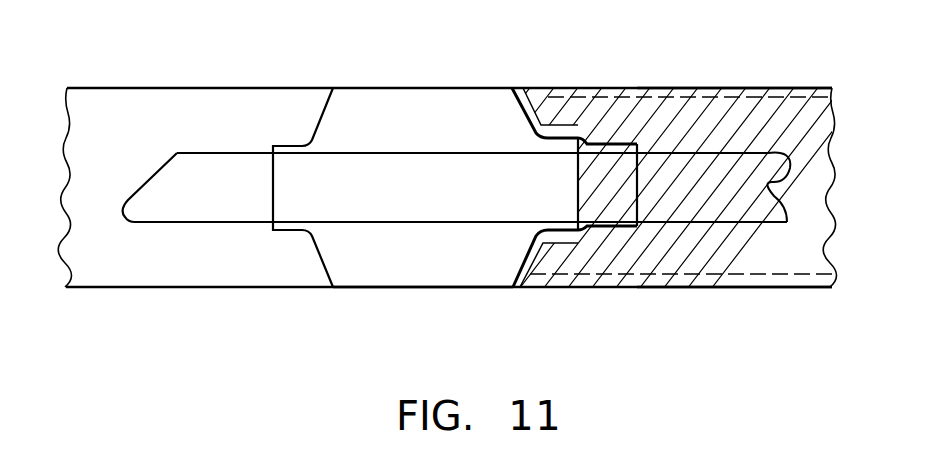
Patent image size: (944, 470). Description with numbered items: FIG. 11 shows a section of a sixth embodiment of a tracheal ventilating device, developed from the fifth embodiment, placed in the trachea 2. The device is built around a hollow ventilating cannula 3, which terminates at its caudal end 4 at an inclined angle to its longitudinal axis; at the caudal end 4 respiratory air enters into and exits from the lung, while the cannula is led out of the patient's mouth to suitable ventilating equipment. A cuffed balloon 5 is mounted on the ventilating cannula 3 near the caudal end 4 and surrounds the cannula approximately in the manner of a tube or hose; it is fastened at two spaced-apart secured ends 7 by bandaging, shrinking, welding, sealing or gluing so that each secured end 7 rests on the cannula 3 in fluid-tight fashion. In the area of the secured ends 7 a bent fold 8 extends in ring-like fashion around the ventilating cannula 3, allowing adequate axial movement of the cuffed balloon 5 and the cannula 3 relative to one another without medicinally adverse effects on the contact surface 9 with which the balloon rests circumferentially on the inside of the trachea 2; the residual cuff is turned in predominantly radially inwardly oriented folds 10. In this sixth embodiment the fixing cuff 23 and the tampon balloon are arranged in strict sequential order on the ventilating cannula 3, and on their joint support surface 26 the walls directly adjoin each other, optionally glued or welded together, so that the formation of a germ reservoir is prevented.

The trachea 2 is at (173, 86).
The ventilating cannula 3 is at (702, 178).
The caudal end 4 is at (182, 210).
The cuffed balloon 5 is at (728, 247).
The secured ends 7 is at (607, 133).
The bent fold 8 is at (293, 146).
The contact surface 9 is at (417, 86).
The folds 10 is at (747, 86).
The fixing cuff 23 is at (435, 268).
The support surface 26 is at (524, 117).